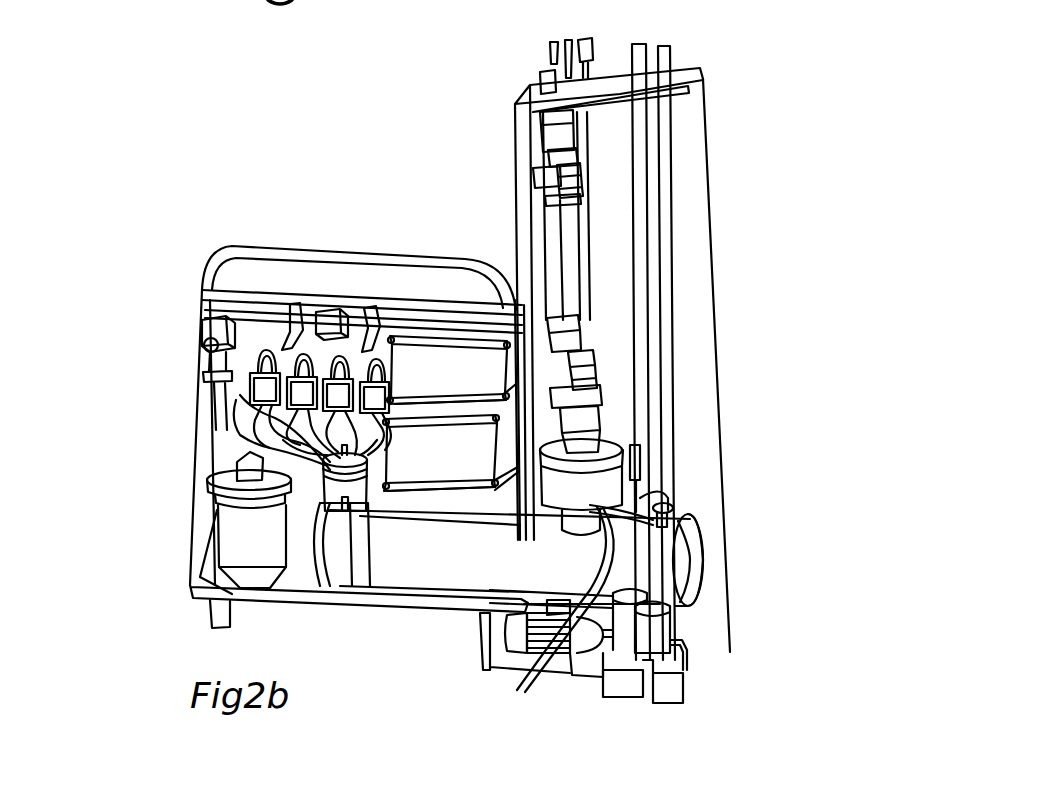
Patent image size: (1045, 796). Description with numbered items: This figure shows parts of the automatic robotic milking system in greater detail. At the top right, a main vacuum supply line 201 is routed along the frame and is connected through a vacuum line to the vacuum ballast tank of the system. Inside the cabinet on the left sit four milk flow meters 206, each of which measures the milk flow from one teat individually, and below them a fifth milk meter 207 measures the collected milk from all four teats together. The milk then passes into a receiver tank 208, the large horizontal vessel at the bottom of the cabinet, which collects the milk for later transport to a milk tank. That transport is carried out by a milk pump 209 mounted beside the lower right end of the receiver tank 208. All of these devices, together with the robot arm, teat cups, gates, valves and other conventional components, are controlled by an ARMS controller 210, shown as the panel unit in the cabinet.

The main vacuum supply line 201 is at (543, 74).
The milk flow meters 206 is at (240, 402).
The milk meter 207 is at (328, 470).
The receiver tank 208 is at (412, 563).
The milk pump 209 is at (510, 640).
The ARMS controller 210 is at (437, 370).